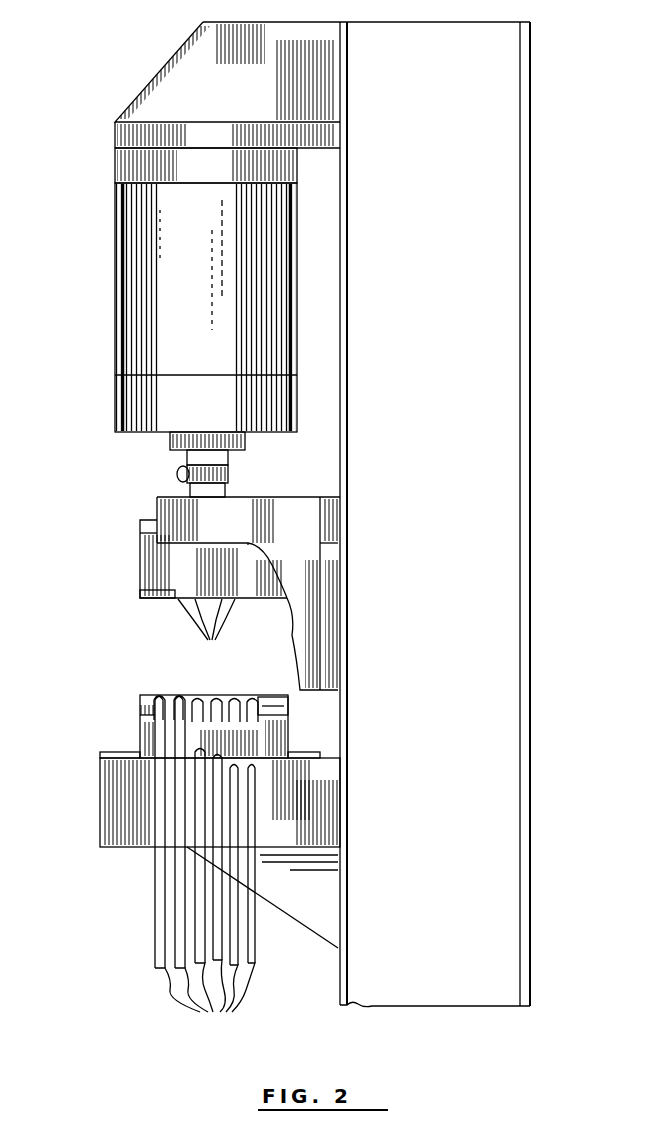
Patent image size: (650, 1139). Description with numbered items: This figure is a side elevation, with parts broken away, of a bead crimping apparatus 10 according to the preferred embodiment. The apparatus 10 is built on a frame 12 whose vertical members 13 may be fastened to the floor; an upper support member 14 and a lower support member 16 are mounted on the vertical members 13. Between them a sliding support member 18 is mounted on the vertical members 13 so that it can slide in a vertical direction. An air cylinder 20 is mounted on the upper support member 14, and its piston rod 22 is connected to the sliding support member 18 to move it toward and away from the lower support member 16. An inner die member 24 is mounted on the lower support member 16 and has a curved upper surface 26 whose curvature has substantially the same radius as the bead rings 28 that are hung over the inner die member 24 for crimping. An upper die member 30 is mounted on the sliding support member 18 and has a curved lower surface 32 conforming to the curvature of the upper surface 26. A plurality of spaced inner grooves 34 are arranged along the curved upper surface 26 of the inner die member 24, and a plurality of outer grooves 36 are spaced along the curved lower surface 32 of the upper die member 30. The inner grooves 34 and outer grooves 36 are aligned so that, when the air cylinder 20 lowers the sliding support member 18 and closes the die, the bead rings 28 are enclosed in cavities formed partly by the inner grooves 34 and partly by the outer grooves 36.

The bead crimping apparatus 10 is at (108, 362).
The frame 12 is at (487, 249).
The vertical members 13 is at (500, 545).
The upper support member 14 is at (128, 135).
The lower support member 16 is at (100, 758).
The sliding support member 18 is at (205, 525).
The air cylinder 20 is at (165, 240).
The piston rod 22 is at (228, 472).
The inner die member 24 is at (148, 732).
The curved upper surface 26 is at (150, 697).
The bead rings 28 is at (205, 868).
The upper die member 30 is at (160, 575).
The curved lower surface 32 is at (150, 600).
The inner grooves 34 is at (222, 700).
The outer grooves 36 is at (206, 634).